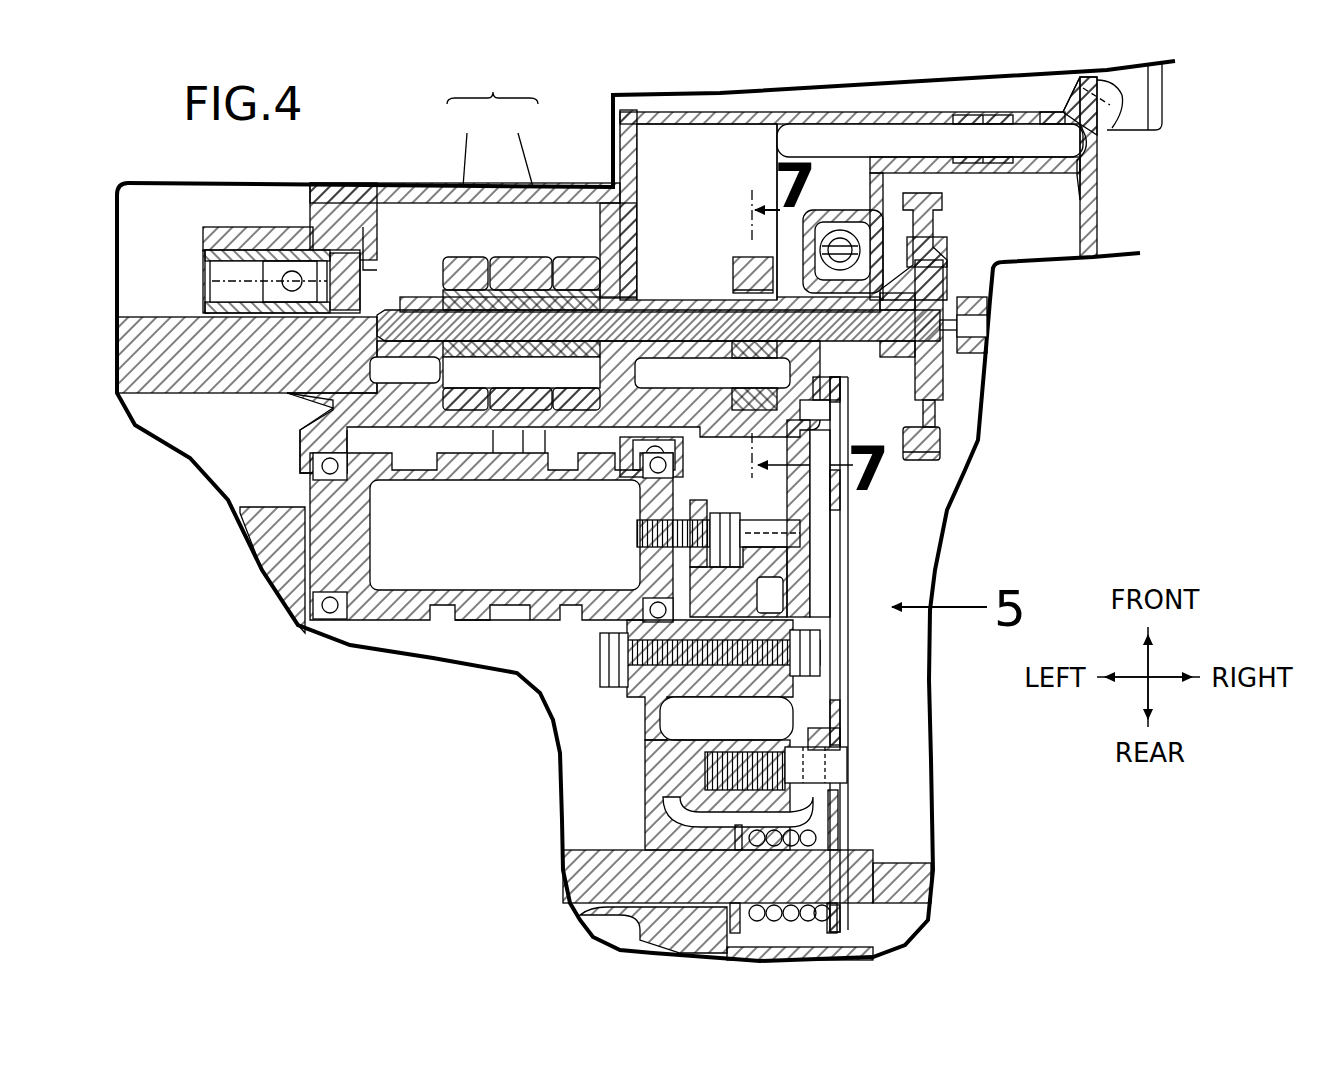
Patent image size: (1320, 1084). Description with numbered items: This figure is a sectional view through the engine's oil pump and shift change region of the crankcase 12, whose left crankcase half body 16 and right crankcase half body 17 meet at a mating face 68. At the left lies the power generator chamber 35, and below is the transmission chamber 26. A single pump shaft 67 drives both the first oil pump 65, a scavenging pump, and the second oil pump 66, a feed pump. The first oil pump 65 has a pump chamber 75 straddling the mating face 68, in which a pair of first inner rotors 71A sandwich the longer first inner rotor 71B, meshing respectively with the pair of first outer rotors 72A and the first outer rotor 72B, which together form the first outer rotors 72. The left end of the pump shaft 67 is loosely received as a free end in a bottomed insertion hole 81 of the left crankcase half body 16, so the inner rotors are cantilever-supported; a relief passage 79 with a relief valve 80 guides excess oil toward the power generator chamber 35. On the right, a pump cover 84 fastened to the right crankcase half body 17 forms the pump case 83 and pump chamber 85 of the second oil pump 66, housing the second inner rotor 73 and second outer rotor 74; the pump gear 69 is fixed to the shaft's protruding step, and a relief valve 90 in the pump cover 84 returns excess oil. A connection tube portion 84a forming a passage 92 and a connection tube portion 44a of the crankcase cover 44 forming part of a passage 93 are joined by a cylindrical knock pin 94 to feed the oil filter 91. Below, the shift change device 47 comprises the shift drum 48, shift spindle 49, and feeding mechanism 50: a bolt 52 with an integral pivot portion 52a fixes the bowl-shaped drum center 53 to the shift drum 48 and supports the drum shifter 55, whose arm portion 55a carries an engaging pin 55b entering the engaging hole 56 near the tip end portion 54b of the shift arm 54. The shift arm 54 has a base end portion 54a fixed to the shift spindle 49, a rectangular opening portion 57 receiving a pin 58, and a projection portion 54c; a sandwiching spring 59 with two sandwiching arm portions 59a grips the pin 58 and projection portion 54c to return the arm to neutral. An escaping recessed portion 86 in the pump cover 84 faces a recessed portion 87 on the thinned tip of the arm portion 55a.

The crankcase 12 is at (492, 84).
The left crankcase half body 16 is at (467, 146).
The right crankcase half body 17 is at (518, 146).
The transmission chamber 26 is at (541, 677).
The power generator chamber 35 is at (138, 246).
The crankcase cover 44 is at (1098, 215).
The connection tube portion 44a is at (1032, 118).
The shift change device 47 is at (600, 632).
The shift drum 48 is at (490, 618).
The shift spindle 49 is at (580, 875).
The feeding mechanism 50 is at (848, 730).
The bolt 52 is at (633, 527).
The pivot portion 52a is at (780, 543).
The drum center 53 is at (640, 560).
The shift arm 54 is at (838, 527).
The base end portion 54a is at (840, 930).
The tip end portion 54b is at (940, 397).
The projection portion 54c is at (830, 735).
The drum shifter 55 is at (767, 580).
The arm portion 55a is at (807, 497).
The engaging pin 55b is at (935, 422).
The engaging hole 56 is at (837, 490).
The opening portion 57 is at (845, 755).
The pin 58 is at (840, 770).
The sandwiching spring 59 is at (760, 820).
The sandwiching arm portions 59a is at (833, 805).
The first oil pump 65 is at (452, 442).
The second oil pump 66 is at (730, 252).
The pump shaft 67 is at (523, 430).
The mating face 68 is at (493, 430).
The pump gear 69 is at (942, 213).
The first inner rotors 71A is at (446, 300).
The first inner rotor 71B is at (523, 300).
The first outer rotors 72 is at (545, 430).
The first outer rotors 72A is at (440, 262).
The first outer rotor 72B is at (506, 262).
The second inner rotor 73 is at (733, 272).
The second outer rotor 74 is at (745, 245).
The pump chamber 75 is at (338, 398).
The relief passage 79 is at (367, 268).
The relief valve 80 is at (258, 320).
The insertion hole 81 is at (392, 322).
The pump case 83 is at (920, 377).
The pump cover 84 is at (818, 118).
The connection tube portion 84a is at (913, 120).
The pump chamber 85 is at (730, 386).
The escaping recessed portion 86 is at (830, 410).
The recessed portion 87 is at (790, 398).
The relief valve 90 is at (840, 232).
The oil filter 91 is at (1138, 108).
The passage 92 is at (877, 157).
The passage 93 is at (1063, 140).
The knock pin 94 is at (1010, 168).